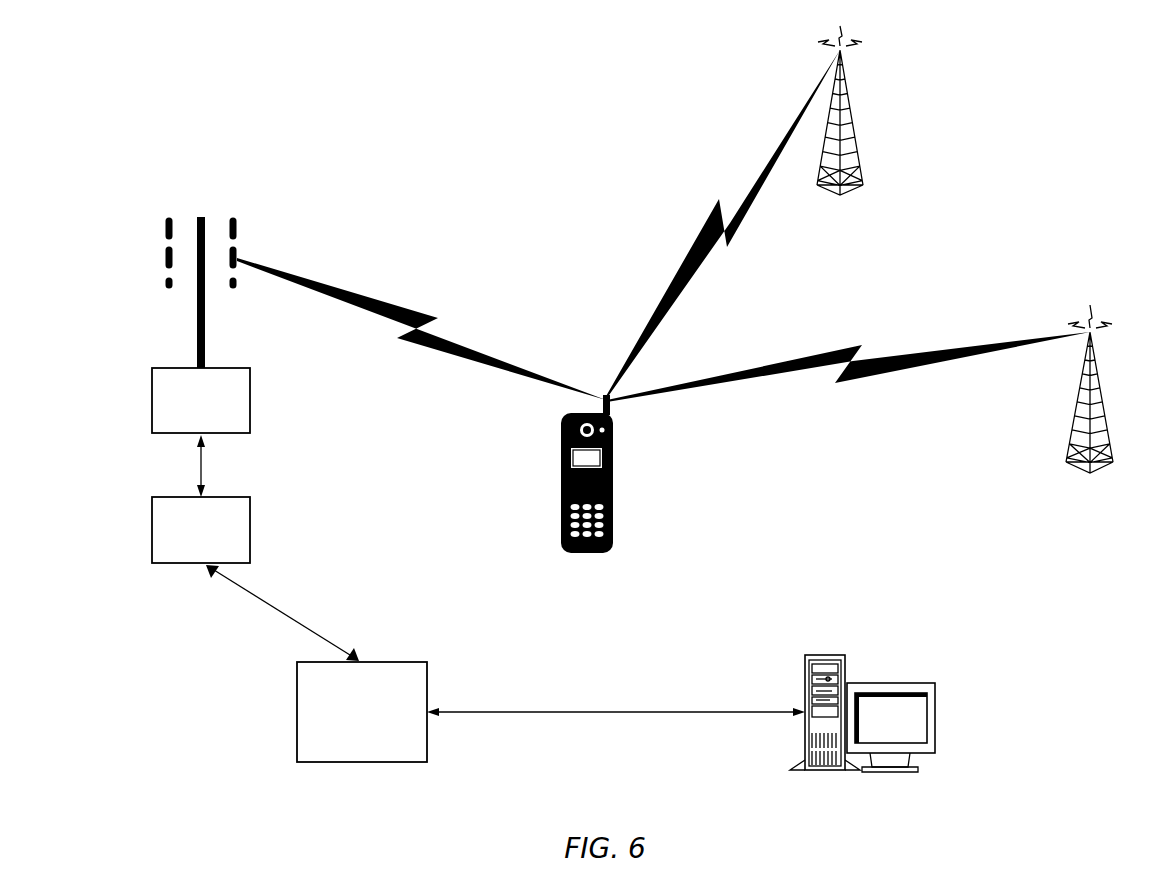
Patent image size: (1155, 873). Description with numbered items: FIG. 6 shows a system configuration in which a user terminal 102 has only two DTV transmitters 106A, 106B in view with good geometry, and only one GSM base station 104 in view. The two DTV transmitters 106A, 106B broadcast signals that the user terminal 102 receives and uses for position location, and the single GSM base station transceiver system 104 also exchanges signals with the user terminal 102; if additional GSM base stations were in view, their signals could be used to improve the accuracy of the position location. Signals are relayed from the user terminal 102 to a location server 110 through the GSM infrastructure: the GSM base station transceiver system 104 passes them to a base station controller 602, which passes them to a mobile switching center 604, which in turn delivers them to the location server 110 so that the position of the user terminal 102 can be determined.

The user terminal 102 is at (613, 498).
The GSM base station transceiver system (BTS) 104 is at (250, 400).
The DTV transmitter 106A is at (857, 128).
The DTV transmitter 106B is at (1068, 428).
The location server 110 is at (805, 665).
The base station controller (BSC) 602 is at (250, 530).
The mobile switching center 604 is at (297, 712).